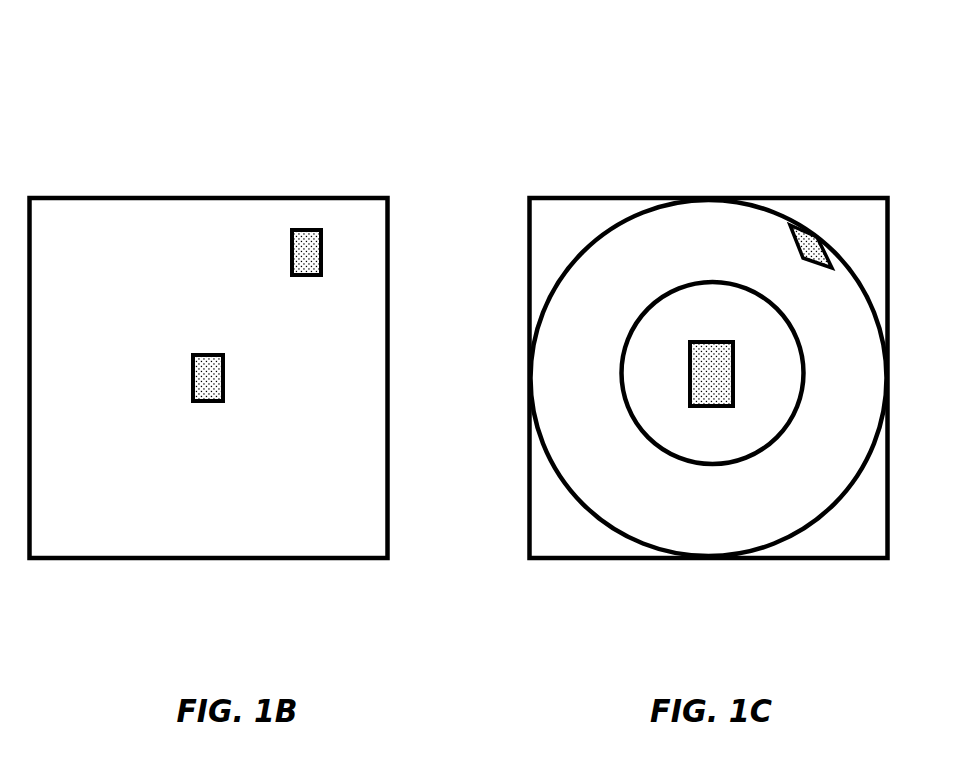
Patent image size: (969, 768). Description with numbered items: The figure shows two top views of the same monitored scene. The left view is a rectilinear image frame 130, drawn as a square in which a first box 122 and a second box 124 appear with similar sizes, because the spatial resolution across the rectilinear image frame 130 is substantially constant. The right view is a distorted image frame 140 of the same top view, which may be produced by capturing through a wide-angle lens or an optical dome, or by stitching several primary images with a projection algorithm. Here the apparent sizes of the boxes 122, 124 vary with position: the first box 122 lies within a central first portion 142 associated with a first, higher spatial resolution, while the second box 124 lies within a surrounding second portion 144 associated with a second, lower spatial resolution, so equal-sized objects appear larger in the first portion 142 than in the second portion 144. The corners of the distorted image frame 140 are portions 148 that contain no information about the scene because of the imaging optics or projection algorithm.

In FIG. 1B, the rectilinear image frame 130 is at (149, 113).
In FIG. 1C, the distorted image frame 140 is at (622, 100).
In FIG. 1B, the first box 122 is at (203, 372).
In FIG. 1C, the first box 122 is at (705, 373).
In FIG. 1B, the second box 124 is at (313, 247).
In FIG. 1C, the second box 124 is at (810, 233).
In FIG. 1C, the first portion 142 is at (753, 387).
In FIG. 1C, the second portion 144 is at (562, 440).
In FIG. 1C, the portions without information 148 is at (538, 220).